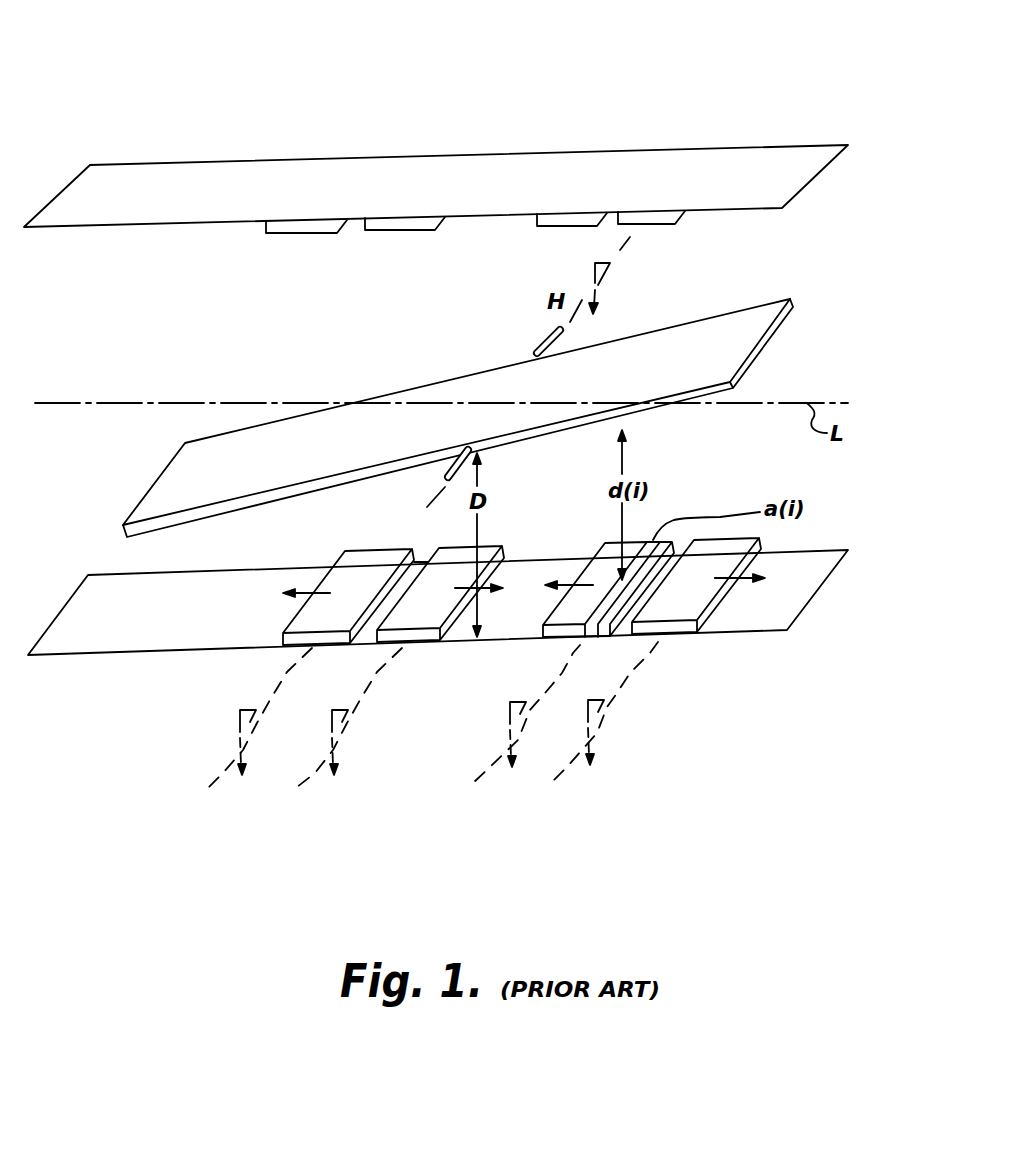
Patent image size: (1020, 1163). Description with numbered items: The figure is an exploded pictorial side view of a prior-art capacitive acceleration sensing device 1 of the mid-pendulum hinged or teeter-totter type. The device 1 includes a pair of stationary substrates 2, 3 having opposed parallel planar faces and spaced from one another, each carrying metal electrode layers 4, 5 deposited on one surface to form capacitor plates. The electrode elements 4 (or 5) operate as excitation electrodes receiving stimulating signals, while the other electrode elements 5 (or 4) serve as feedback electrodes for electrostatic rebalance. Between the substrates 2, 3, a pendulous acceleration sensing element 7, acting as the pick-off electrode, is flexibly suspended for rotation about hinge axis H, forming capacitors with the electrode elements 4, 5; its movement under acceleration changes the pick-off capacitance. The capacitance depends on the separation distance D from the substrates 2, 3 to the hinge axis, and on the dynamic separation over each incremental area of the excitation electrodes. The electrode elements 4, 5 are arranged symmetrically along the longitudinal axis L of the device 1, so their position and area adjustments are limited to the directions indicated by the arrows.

The capacitive acceleration sensing device 1 is at (857, 94).
The stationary substrate 2 is at (732, 210).
The stationary substrate 3 is at (820, 590).
The electrode elements 4 is at (395, 229).
The electrode elements 5 is at (310, 233).
The pendulous acceleration sensing element 7 is at (763, 350).